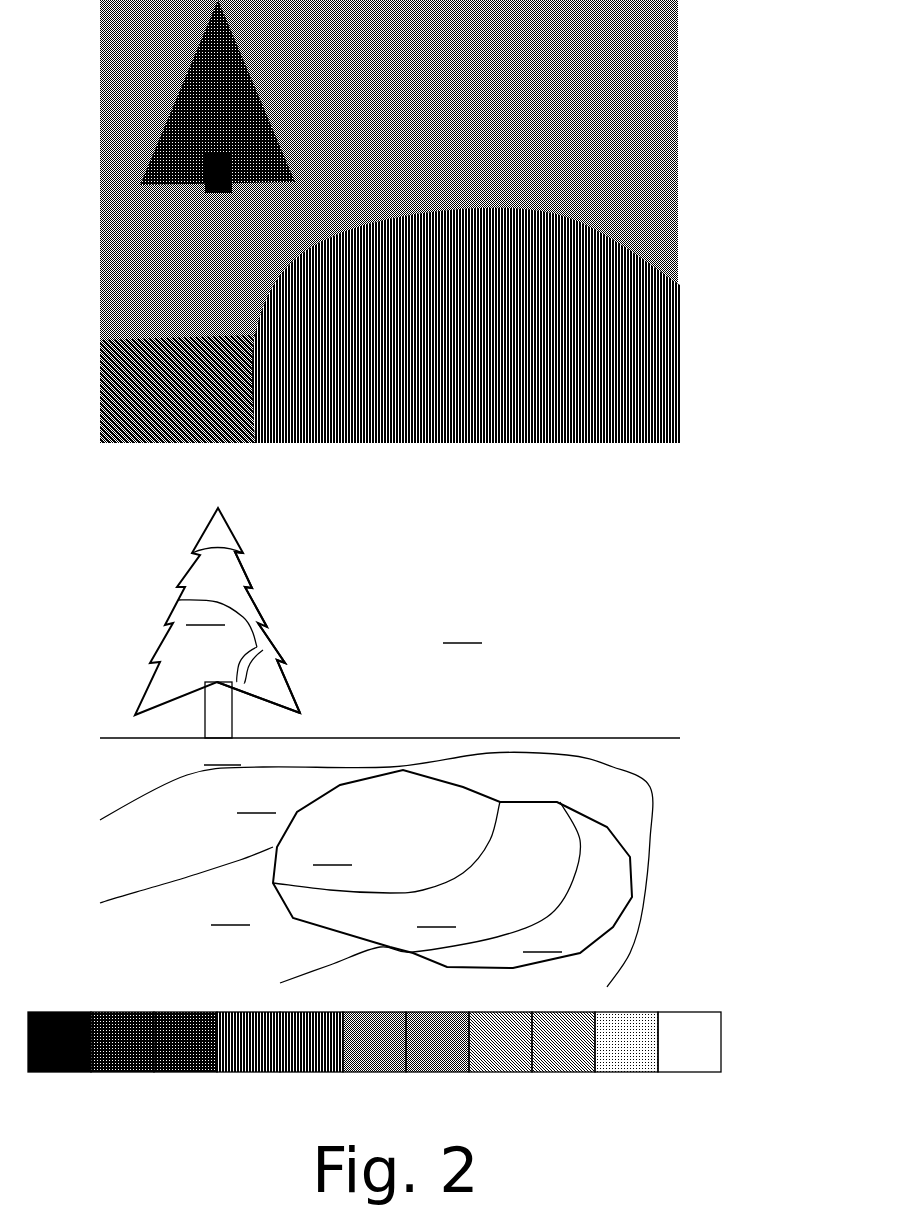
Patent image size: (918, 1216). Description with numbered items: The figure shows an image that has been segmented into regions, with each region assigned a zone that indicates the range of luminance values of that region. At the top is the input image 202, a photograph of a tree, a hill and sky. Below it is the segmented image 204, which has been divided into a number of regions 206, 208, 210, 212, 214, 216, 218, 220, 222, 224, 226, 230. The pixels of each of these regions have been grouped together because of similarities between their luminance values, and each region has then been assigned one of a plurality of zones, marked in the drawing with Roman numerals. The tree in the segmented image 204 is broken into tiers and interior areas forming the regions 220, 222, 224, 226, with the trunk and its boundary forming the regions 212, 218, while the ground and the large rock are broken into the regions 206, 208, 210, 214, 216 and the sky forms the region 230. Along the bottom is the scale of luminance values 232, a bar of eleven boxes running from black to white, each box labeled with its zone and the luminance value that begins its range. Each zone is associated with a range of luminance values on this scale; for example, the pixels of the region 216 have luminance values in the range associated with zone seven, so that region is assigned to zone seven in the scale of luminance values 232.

The input image 202 is at (678, 72).
The segmented image 204 is at (678, 612).
The region 206 is at (256, 915).
The region 208 is at (452, 869).
The region 210 is at (376, 869).
The region 212 is at (251, 724).
The region 214 is at (386, 865).
The region 216 is at (509, 877).
The region 218 is at (233, 703).
The region 220 is at (287, 690).
The region 222 is at (220, 641).
The region 224 is at (260, 600).
The region 226 is at (243, 543).
The region 230 is at (436, 619).
The scale of luminance values 232 is at (722, 1014).